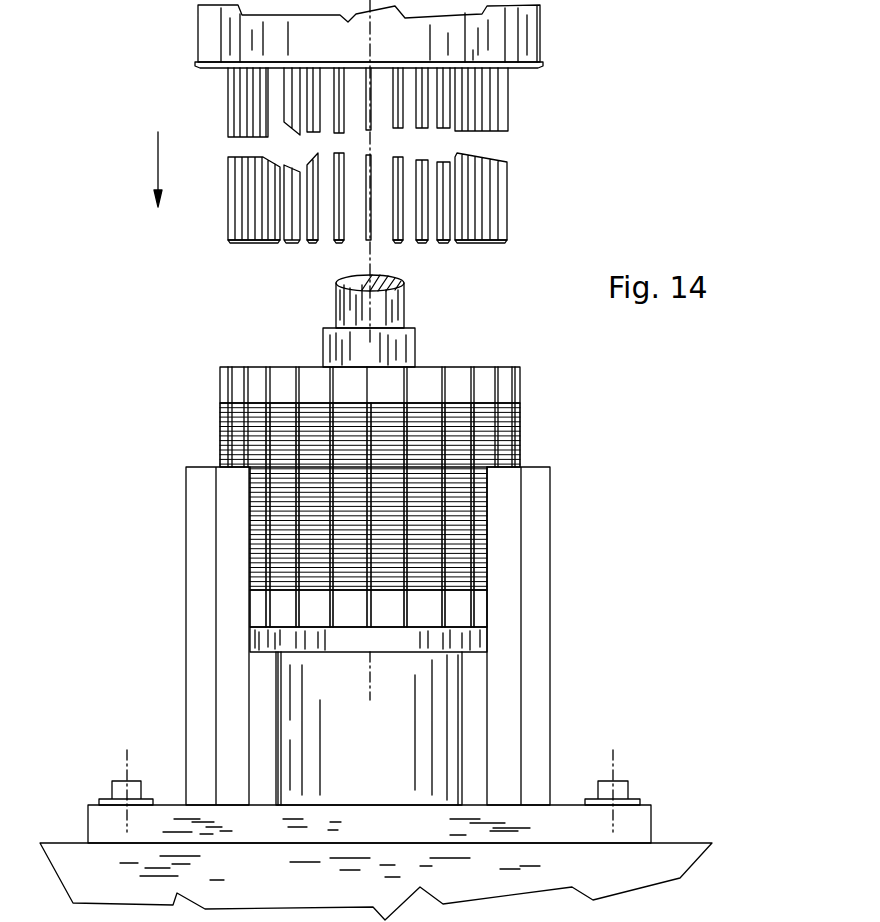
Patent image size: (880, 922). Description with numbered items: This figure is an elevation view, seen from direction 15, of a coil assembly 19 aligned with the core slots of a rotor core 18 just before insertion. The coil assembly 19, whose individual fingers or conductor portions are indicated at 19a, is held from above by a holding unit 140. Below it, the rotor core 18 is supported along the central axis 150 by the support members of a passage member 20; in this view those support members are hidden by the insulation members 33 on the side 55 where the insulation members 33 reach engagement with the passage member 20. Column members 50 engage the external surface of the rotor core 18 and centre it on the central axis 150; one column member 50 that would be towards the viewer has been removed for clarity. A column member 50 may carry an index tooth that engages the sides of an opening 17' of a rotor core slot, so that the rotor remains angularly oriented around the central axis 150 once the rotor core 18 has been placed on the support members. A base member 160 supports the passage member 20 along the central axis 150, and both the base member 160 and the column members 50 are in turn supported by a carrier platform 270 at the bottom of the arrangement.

The holding unit 140 is at (520, 42).
The pressing direction arrow 15 is at (158, 153).
The coil assembly 19 is at (533, 136).
The fingers 19a is at (505, 208).
The central axis 150 is at (380, 266).
The rotor core 18 is at (543, 421).
The opening of rotor core slot 17' is at (418, 496).
The insulation members 33 is at (320, 605).
The passage member 20 is at (465, 640).
The base member 160 is at (348, 722).
The column members 50 is at (207, 517).
The side 55 is at (595, 603).
The carrier platform 270 is at (653, 865).